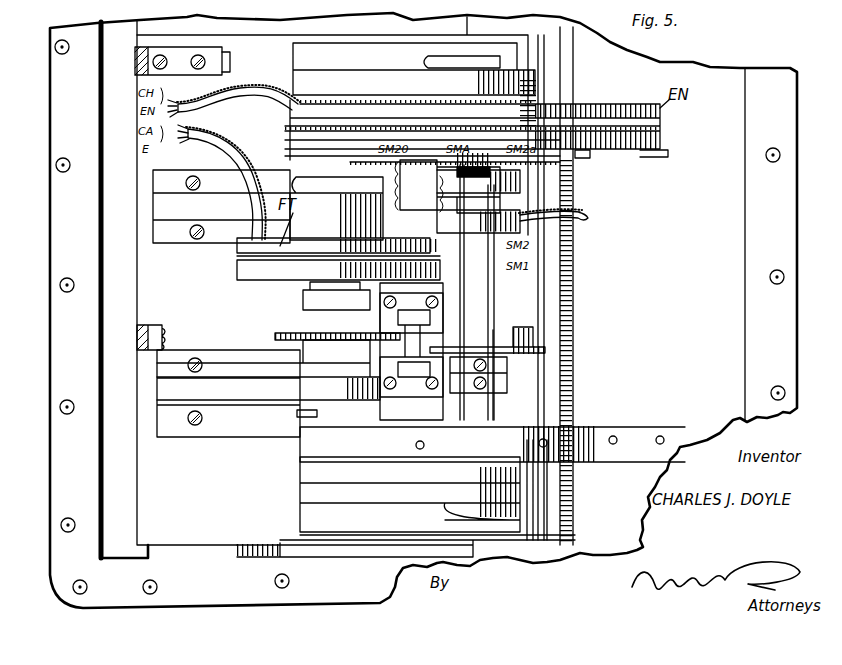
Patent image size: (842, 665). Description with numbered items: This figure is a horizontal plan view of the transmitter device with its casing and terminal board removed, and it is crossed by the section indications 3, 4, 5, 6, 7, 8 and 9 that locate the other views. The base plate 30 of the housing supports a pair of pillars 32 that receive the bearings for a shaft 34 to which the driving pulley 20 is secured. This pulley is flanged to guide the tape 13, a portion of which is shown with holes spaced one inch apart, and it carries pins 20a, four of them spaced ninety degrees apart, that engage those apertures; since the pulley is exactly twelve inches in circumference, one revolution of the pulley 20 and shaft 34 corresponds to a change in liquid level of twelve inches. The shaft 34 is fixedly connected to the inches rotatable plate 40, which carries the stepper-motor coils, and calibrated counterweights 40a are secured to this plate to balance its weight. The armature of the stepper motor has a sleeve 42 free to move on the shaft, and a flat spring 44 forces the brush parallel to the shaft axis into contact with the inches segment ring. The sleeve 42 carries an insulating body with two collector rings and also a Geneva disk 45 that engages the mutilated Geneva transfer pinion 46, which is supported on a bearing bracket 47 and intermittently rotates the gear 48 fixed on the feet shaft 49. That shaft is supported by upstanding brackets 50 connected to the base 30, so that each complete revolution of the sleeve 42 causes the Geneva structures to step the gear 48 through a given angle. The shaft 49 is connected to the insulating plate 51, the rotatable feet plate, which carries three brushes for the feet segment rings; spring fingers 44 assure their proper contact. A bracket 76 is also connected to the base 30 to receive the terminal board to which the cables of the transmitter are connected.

The section line 3- 3 is at (300, 532).
The section line 4- 4 is at (280, 366).
The section line 5-5 / cable 5 is at (559, 221).
The section line 6- 6 is at (651, 182).
The section line 7- 7 is at (252, 298).
The section line 8- 8 is at (260, 264).
The section line 9- 9 is at (290, 133).
The tape 13 is at (664, 407).
The driving pulley 20 is at (492, 444).
The pins 20a is at (593, 406).
The base plate 30 is at (697, 342).
The pillars 32 is at (414, 273).
The shaft 34 is at (483, 386).
The rotatable plate 40 is at (660, 152).
The counterweights 40a is at (585, 156).
The sleeve 42 is at (560, 292).
The flat spring 44 is at (690, 183).
The Geneva disk 45 is at (560, 347).
The Geneva transfer pinion 46 is at (420, 333).
The bearing bracket 47 is at (411, 347).
The gear 48 is at (305, 318).
The feet shaft 49 is at (310, 307).
The upstanding brackets 50 is at (226, 303).
The insulating plate 51 is at (262, 266).
The bracket 76 is at (135, 68).